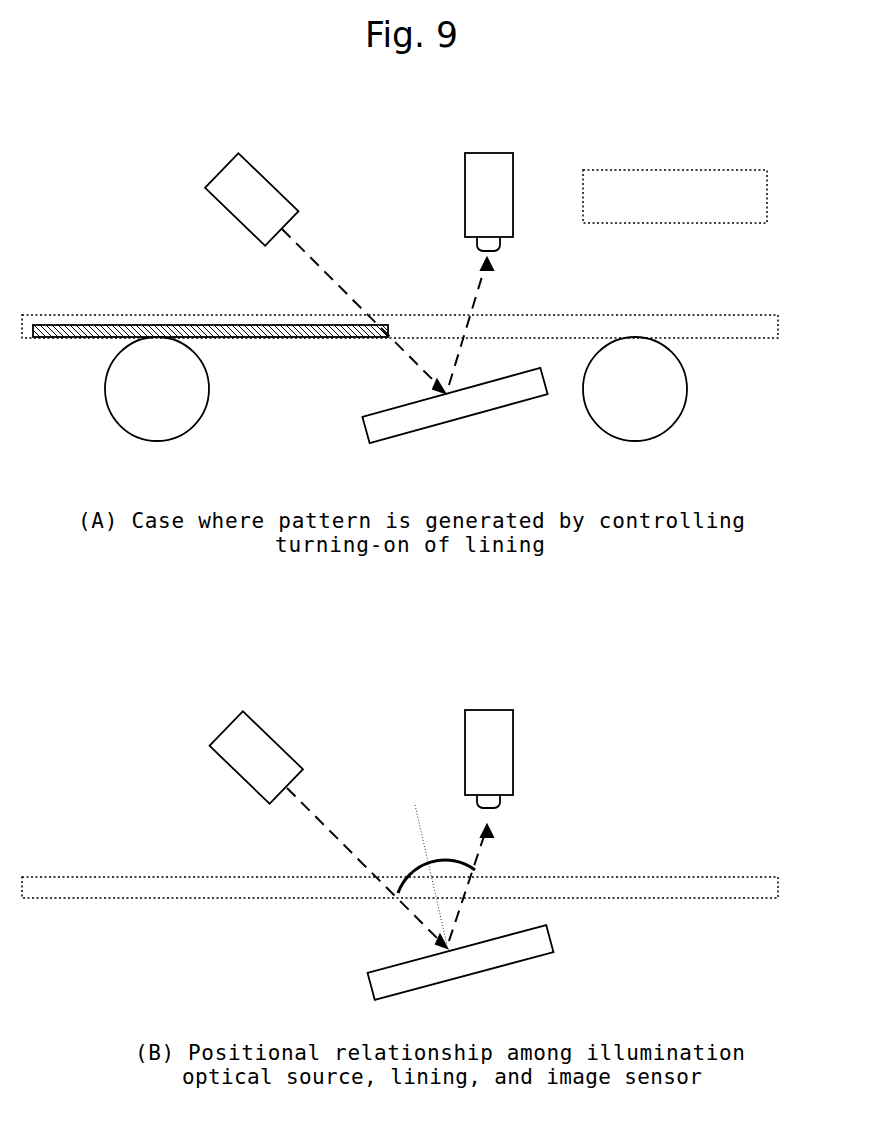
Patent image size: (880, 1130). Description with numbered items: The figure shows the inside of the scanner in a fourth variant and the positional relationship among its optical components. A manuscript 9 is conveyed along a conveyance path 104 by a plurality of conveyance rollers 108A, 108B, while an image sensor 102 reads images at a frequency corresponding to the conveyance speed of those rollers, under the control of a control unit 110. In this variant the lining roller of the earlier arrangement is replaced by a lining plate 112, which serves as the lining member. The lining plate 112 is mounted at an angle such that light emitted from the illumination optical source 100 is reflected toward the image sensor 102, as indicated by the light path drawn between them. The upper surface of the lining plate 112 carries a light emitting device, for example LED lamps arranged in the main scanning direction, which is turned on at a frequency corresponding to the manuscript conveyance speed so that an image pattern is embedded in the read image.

The manuscript 9 is at (88, 322).
The illumination optical source 100 is at (230, 163).
The image sensor 102 is at (490, 155).
The conveyance path 104 is at (777, 316).
The conveyance roller 108A is at (120, 428).
The conveyance roller 108B is at (660, 437).
The control unit 110 is at (665, 170).
The lining plate 112 is at (498, 457).